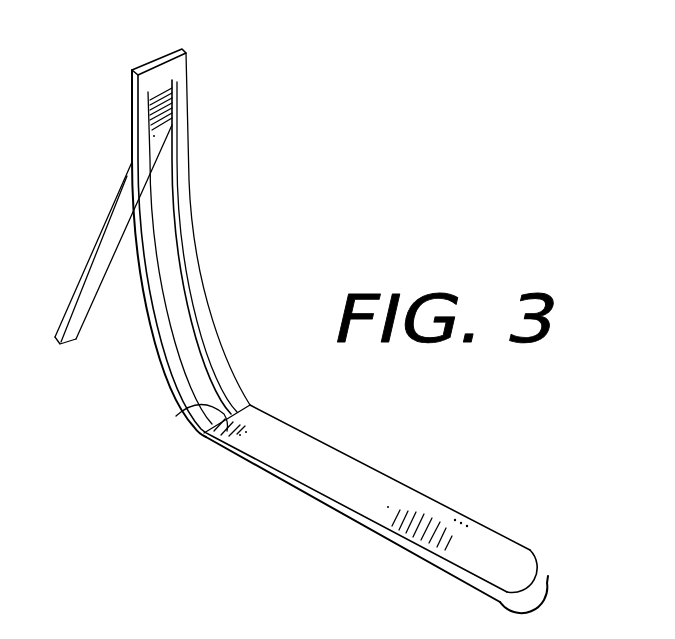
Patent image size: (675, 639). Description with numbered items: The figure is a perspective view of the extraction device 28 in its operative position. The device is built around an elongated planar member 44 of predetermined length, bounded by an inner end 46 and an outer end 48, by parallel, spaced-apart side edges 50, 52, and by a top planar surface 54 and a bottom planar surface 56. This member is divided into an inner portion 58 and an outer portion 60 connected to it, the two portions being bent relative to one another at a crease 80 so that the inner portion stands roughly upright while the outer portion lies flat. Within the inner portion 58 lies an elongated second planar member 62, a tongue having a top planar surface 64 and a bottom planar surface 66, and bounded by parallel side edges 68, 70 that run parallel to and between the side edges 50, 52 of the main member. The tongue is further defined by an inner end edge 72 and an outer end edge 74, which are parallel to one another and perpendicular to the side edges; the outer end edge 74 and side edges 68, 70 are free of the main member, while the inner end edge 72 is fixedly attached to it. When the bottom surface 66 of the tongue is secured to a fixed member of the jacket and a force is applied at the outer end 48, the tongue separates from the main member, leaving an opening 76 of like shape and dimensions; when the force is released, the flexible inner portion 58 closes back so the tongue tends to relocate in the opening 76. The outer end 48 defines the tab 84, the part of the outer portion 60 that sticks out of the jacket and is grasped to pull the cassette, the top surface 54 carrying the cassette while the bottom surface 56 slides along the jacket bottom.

The extraction device 28 is at (315, 314).
The elongated planar member 44 is at (282, 414).
The inner end 46 is at (143, 63).
The outer end 48 is at (546, 586).
The side edge 50 is at (233, 456).
The side edge 52 is at (197, 233).
The top planar surface 54 is at (376, 490).
The bottom planar surface 56 is at (347, 523).
The inner portion 58 is at (158, 357).
The outer portion 60 is at (443, 582).
The second planar member 62 is at (95, 265).
The top planar surface 64 is at (92, 286).
The bottom planar surface 66 is at (97, 245).
The side edge 68 is at (80, 288).
The side edge 70 is at (88, 323).
The inner end edge 72 is at (160, 78).
The outer end edge 74 is at (71, 355).
The opening 76 is at (184, 281).
The crease 80 is at (183, 409).
The tab 84 is at (508, 568).